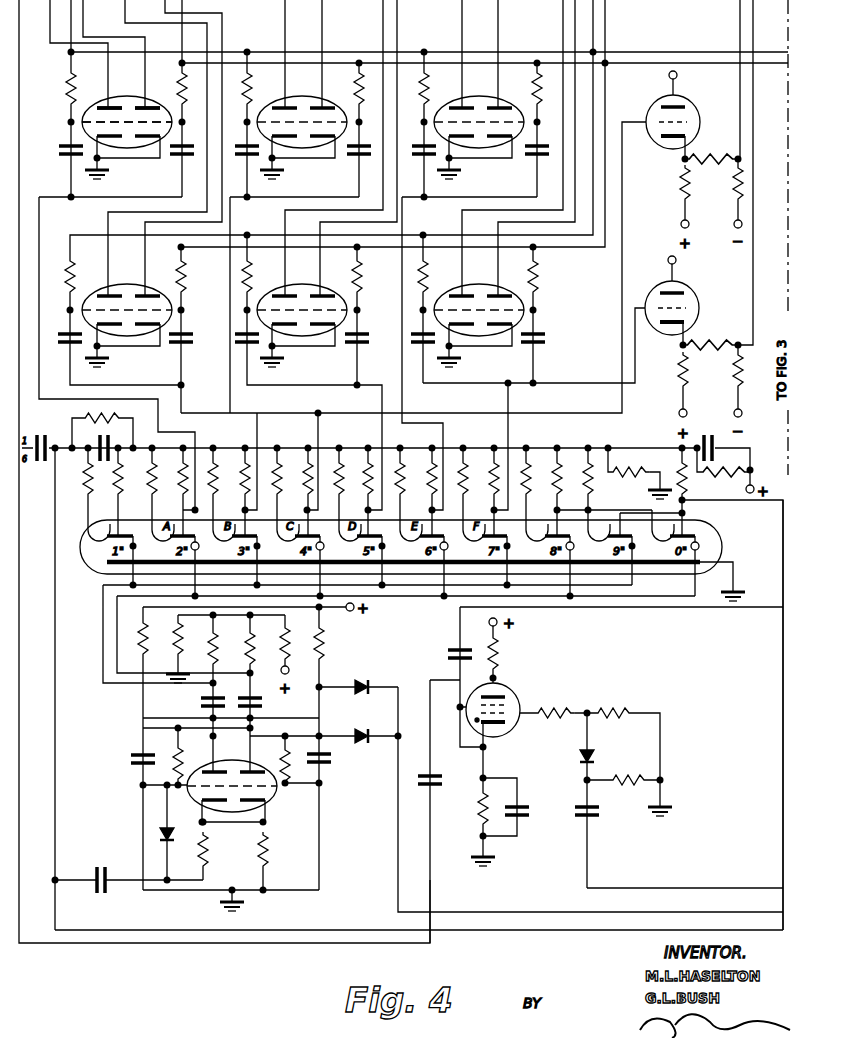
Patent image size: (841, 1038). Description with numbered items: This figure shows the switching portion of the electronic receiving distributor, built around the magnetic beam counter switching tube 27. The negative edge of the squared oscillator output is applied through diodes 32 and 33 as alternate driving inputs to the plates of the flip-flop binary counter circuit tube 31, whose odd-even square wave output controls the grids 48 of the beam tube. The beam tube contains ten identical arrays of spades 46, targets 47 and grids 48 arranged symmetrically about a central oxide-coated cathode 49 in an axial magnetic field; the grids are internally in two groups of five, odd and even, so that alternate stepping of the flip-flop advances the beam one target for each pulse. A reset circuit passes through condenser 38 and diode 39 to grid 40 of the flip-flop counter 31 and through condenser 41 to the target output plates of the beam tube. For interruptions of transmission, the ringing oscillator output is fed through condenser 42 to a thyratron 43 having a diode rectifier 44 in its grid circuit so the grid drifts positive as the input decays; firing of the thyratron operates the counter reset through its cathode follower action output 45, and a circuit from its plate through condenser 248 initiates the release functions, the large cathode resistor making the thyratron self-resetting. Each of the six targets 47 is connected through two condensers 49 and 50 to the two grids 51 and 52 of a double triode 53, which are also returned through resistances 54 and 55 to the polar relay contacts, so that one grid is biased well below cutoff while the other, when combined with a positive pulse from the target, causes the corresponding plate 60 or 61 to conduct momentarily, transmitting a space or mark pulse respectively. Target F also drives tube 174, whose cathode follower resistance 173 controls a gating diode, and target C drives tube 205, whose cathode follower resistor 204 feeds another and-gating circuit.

The magnetic beam counter switching tube 27 is at (82, 556).
The flip-flop binary counter circuit tube 31 is at (268, 806).
The diode 32 is at (358, 680).
The diode 33 is at (358, 729).
The condenser 38 is at (101, 868).
The diode 39 is at (170, 836).
The grid 40 is at (181, 768).
The condenser 41 is at (54, 438).
The condenser 42 is at (592, 812).
The thyratron 43 is at (521, 700).
The diode rectifier 44 is at (592, 757).
The cathode follower action output 45 is at (481, 752).
The spades 46 is at (102, 540).
The targets 47 is at (122, 528).
The grids 48 is at (136, 546).
The cathode; condenser 49 is at (60, 146).
The condenser 50 is at (186, 146).
The grid 51 is at (80, 122).
The grid 52 is at (180, 94).
The double triode 53 is at (125, 110).
The resistance 54 is at (66, 84).
The resistance 55 is at (184, 94).
The plate 60 is at (110, 92).
The plate 61 is at (146, 92).
The cathode follower resistance 173 is at (690, 362).
The tube 174 is at (692, 318).
The cathode follower resistor 204 is at (690, 180).
The tube 205 is at (692, 138).
The condenser 248 is at (433, 787).